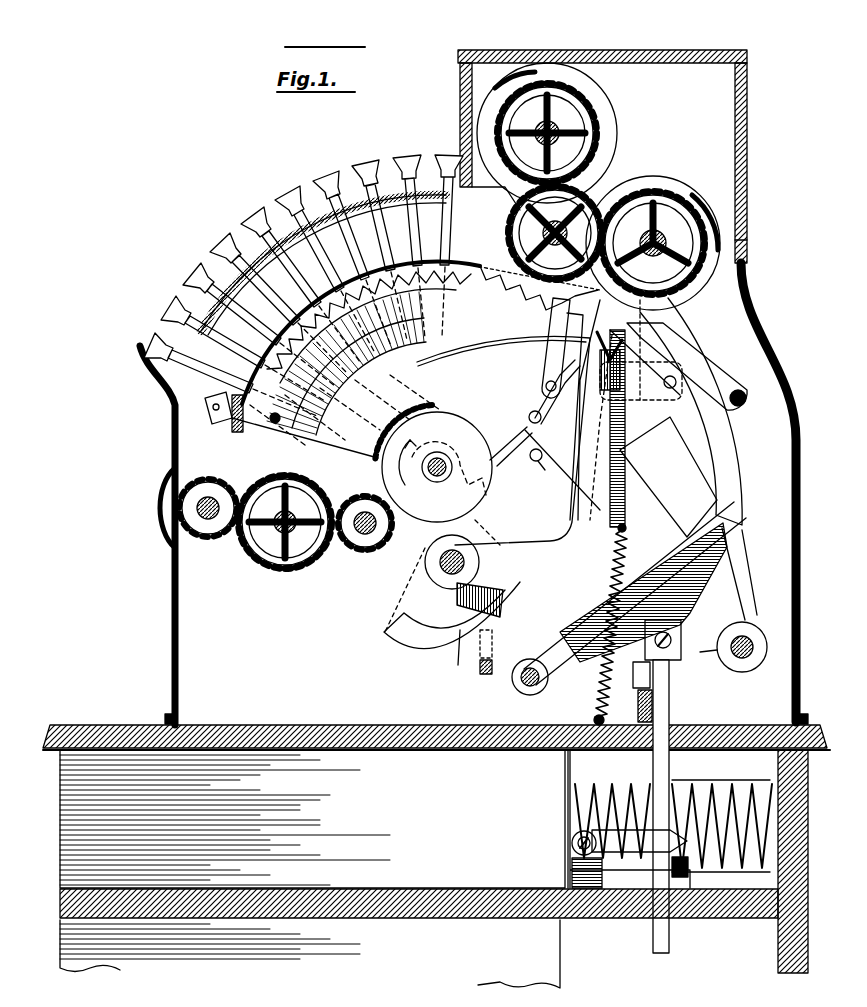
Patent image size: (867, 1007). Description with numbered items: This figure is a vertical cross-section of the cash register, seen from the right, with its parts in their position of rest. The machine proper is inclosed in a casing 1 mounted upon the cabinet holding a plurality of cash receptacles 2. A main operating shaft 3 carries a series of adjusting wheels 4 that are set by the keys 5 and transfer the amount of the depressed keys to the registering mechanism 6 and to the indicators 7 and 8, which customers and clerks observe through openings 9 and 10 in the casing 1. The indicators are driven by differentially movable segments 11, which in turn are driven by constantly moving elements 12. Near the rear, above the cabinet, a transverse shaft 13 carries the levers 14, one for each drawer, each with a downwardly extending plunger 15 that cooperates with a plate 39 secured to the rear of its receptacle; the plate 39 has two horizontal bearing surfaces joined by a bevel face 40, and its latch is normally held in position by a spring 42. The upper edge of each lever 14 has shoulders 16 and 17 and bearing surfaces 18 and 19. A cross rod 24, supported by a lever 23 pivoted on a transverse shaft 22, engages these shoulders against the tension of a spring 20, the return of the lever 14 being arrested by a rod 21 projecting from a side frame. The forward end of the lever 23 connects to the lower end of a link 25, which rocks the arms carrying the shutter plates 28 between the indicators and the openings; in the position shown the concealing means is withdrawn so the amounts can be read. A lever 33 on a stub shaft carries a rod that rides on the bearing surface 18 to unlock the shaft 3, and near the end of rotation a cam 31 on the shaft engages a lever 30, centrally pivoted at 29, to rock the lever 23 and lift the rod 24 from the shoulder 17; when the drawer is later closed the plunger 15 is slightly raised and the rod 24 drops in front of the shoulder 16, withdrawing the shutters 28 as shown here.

The casing 1 is at (172, 610).
The cash receptacles 2 is at (434, 869).
The main operating shaft 3 is at (434, 484).
The adjusting wheels 4 is at (445, 412).
The keys 5 is at (342, 165).
The registering mechanism 6 is at (203, 536).
The indicator 7 is at (658, 192).
The indicator 8 is at (615, 126).
The opening 9 is at (748, 248).
The opening 10 is at (460, 130).
The differentially movable segments 11 is at (433, 315).
The constantly moving elements 12 is at (742, 493).
The transverse shaft 13 is at (742, 665).
The lever 14 is at (648, 498).
The plunger 15 is at (652, 763).
The shoulder 16 is at (618, 361).
The shoulder 17 is at (546, 424).
The bearing surface 18 is at (641, 350).
The bearing surface 19 is at (645, 428).
The spring 20 is at (594, 690).
The rod 21 is at (547, 466).
The transverse shaft 22 is at (745, 408).
The lever 23 is at (722, 360).
The cross rod 24 is at (590, 410).
The link 25 is at (551, 348).
The plates 28 is at (492, 78).
The pivot 29 is at (551, 470).
The lever 30 is at (512, 440).
The cam 31 is at (449, 473).
The lever 33 is at (505, 354).
The plate 39 is at (624, 896).
The bevel face 40 is at (616, 846).
The spring 42 is at (690, 872).